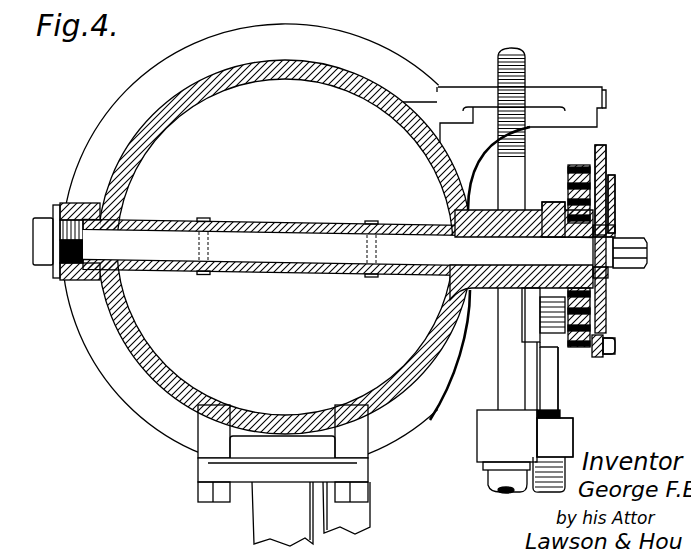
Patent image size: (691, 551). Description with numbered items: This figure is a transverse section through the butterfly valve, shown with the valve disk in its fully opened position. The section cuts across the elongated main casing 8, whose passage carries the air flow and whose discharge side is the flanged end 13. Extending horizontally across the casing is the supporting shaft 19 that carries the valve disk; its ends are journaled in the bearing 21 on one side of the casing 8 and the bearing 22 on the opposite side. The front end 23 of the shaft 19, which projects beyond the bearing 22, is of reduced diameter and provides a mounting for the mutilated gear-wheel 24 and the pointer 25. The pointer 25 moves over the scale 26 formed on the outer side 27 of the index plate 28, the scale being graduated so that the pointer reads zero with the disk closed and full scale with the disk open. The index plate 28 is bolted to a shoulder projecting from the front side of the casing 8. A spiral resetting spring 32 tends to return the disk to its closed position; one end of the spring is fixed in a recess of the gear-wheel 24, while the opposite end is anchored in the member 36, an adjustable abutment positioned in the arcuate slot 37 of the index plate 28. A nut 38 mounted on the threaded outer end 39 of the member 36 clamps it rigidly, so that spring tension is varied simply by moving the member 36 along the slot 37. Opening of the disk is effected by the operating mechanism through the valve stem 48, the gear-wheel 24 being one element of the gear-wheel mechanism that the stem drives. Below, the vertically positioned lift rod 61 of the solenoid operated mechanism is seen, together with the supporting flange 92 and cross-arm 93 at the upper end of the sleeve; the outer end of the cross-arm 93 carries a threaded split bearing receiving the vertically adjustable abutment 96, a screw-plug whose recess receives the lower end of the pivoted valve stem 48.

The main casing 8 is at (283, 61).
The flanged end 13 is at (210, 36).
The supporting shaft 19 is at (308, 236).
The bearing 21 is at (118, 206).
The bearing 22 is at (445, 222).
The front end 23 is at (596, 253).
The mutilated gear-wheel 24 is at (548, 208).
The pointer 25 is at (616, 197).
The scale 26 is at (616, 176).
The outer side 27 is at (606, 150).
The index plate 28 is at (600, 146).
The spiral resetting spring 32 is at (576, 166).
The member 36 is at (556, 358).
The arcuate slot 37 is at (589, 358).
The nut 38 is at (616, 350).
The threaded outer end 39 is at (613, 340).
The valve stem 48 is at (556, 404).
The lift rod 61 is at (500, 385).
The supporting flange 92 is at (485, 468).
The cross-arm 93 is at (545, 431).
The vertically adjustable abutment 96 is at (598, 410).